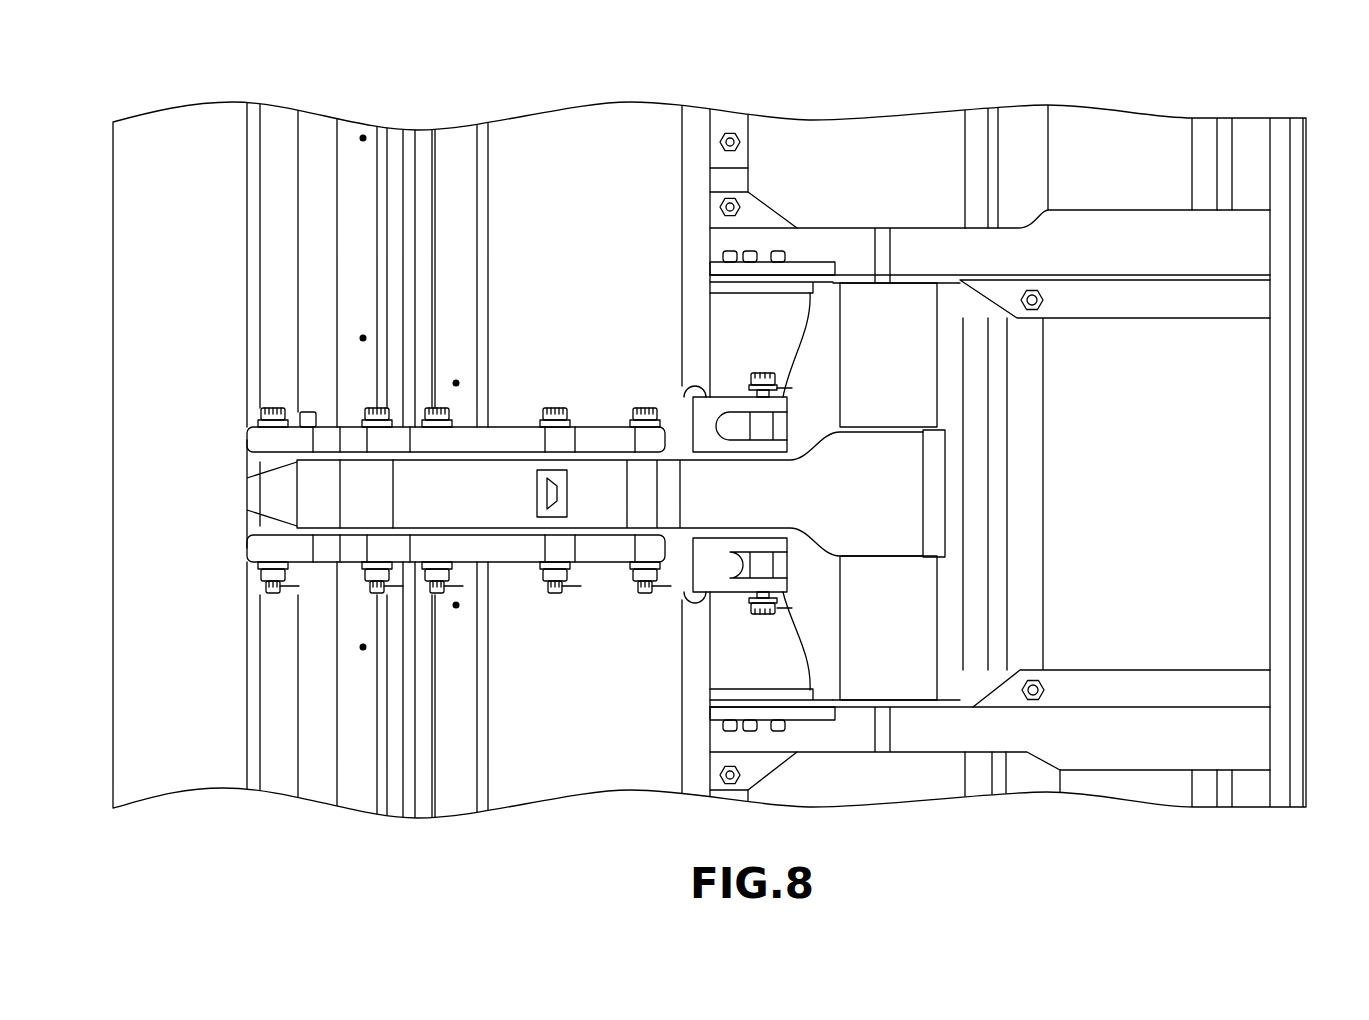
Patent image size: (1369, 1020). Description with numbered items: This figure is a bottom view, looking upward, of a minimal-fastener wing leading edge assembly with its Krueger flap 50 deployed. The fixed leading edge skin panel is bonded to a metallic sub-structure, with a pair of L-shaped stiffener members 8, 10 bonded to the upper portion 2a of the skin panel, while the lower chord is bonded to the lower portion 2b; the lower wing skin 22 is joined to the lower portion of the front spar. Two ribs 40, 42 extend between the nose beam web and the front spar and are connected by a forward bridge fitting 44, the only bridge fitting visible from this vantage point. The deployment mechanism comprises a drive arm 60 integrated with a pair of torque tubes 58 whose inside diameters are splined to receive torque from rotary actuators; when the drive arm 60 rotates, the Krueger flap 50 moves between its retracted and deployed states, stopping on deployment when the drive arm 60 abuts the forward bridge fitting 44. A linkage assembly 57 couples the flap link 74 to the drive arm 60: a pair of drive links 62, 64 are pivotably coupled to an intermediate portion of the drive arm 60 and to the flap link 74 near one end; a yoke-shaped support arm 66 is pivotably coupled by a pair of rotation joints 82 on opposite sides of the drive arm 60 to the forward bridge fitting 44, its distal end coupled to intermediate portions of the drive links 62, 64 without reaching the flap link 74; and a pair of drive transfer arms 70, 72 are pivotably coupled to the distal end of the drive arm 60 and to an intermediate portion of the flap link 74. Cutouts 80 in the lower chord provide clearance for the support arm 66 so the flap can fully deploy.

The upper portion of fixed leading edge skin panel 2a is at (868, 155).
The lower portion of fixed leading edge skin panel 2b is at (586, 130).
The L-shaped stiffener member 8 is at (1025, 478).
The L-shaped stiffener member 10 is at (1253, 547).
The lower wing skin 22 is at (1277, 787).
The rib 40 is at (1137, 760).
The rib 42 is at (1125, 228).
The forward bridge fitting 44 is at (777, 318).
The Krueger flap 50 is at (97, 200).
The clamp assembly 57 is at (208, 410).
The torque tube 58 is at (917, 370).
The drive arm 60 is at (693, 488).
The drive link 62 is at (512, 563).
The drive link 64 is at (503, 425).
The support arm 66 is at (704, 417).
The drive transfer arm 70 is at (343, 545).
The drive transfer arm 72 is at (353, 442).
The flap link 74 is at (340, 495).
The cutout 80 is at (690, 386).
The rotation joint 82 is at (779, 387).